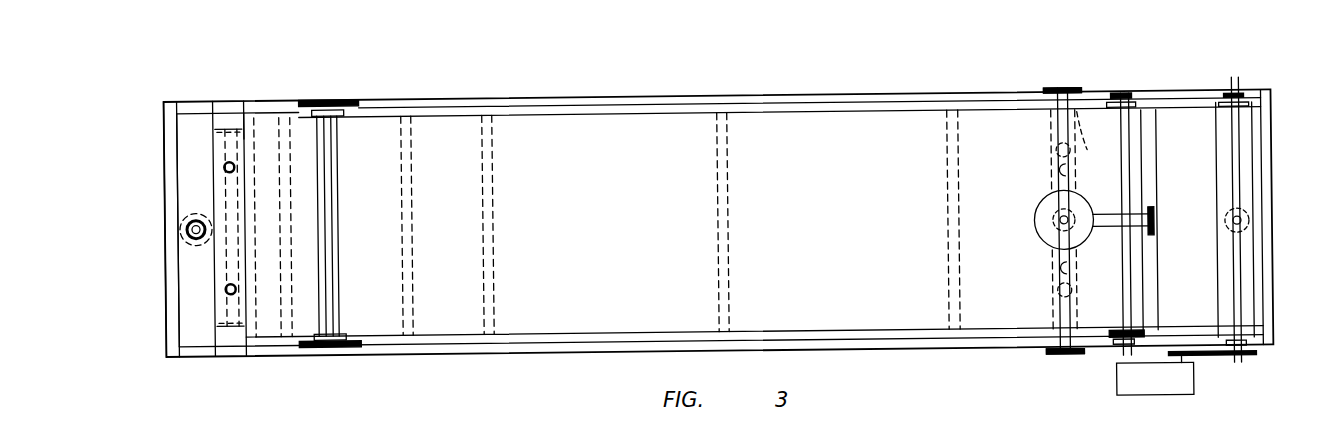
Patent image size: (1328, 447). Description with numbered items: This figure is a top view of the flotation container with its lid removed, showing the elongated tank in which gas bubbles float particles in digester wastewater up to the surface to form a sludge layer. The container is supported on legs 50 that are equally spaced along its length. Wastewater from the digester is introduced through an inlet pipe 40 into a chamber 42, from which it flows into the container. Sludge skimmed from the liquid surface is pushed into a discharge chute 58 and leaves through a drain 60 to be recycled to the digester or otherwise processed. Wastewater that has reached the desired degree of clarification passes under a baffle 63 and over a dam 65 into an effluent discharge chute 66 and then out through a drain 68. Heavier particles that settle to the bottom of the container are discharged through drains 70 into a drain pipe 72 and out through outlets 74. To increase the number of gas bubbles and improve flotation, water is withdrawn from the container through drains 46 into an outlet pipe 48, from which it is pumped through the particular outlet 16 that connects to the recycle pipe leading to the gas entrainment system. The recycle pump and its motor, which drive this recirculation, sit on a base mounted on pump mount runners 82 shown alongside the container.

The outlet 16 is at (231, 126).
The inlet pipe 40 is at (1056, 172).
The chamber 42 is at (1037, 226).
The drains 46 is at (225, 166).
The outlet pipe 48 is at (220, 316).
The legs 50 is at (258, 340).
The discharge chute 58 is at (1248, 155).
The drain 60 is at (1260, 230).
The baffle 63 is at (244, 136).
The dam 65 is at (220, 128).
The effluent discharge chute 66 is at (195, 272).
The drain 68 is at (186, 231).
The drains 70 is at (1047, 148).
The drain pipe 72 is at (1082, 145).
The outlets 74 is at (1050, 89).
The pump mount runners 82 is at (283, 342).